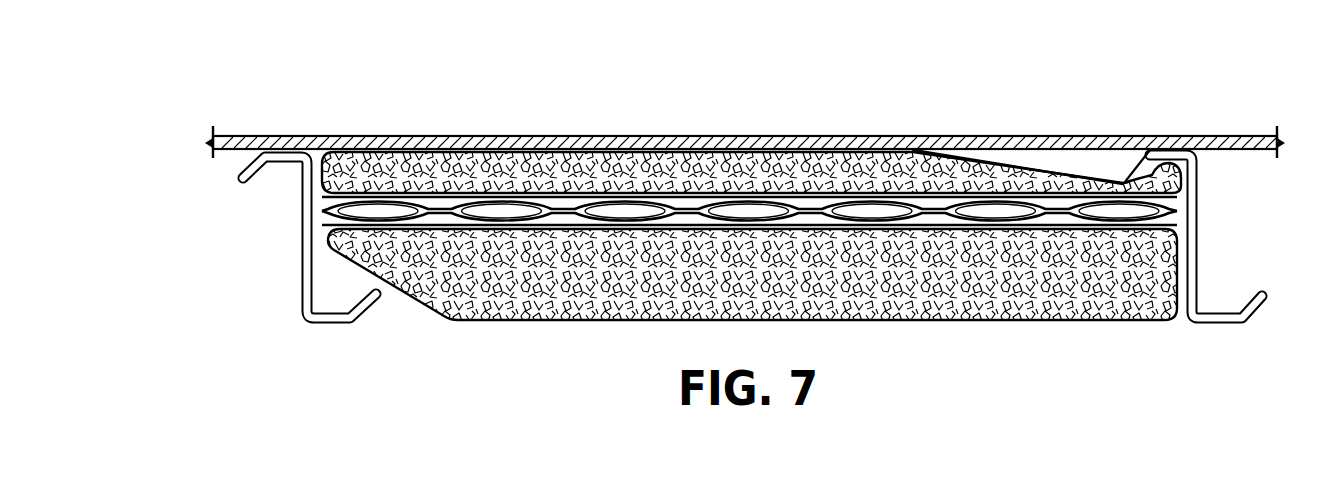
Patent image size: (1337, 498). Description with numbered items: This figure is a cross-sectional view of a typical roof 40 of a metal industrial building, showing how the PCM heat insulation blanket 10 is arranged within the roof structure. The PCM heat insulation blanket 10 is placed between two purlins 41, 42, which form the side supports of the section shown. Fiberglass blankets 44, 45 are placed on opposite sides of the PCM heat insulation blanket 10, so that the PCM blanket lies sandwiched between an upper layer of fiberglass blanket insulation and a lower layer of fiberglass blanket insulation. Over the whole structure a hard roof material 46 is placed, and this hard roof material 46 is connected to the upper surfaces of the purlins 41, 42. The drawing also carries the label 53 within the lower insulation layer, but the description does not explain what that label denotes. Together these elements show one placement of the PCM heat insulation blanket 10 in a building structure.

The PCM heat insulation blanket 10 is at (980, 214).
The roof 40 is at (965, 137).
The purlin 41 is at (1193, 243).
The purlin 42 is at (302, 220).
The fiberglass blanket 44 is at (688, 177).
The fiberglass blanket 45 is at (657, 305).
The hard roof material 46 is at (1252, 135).
The foam core layer 53 is at (752, 286).